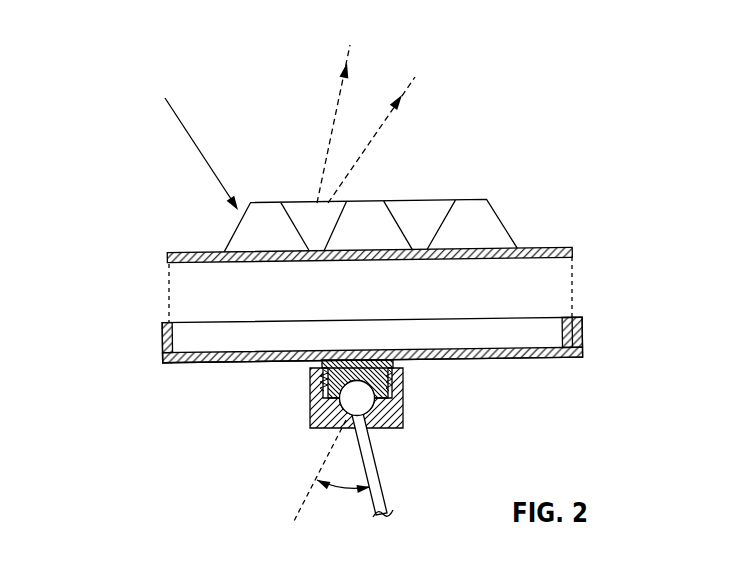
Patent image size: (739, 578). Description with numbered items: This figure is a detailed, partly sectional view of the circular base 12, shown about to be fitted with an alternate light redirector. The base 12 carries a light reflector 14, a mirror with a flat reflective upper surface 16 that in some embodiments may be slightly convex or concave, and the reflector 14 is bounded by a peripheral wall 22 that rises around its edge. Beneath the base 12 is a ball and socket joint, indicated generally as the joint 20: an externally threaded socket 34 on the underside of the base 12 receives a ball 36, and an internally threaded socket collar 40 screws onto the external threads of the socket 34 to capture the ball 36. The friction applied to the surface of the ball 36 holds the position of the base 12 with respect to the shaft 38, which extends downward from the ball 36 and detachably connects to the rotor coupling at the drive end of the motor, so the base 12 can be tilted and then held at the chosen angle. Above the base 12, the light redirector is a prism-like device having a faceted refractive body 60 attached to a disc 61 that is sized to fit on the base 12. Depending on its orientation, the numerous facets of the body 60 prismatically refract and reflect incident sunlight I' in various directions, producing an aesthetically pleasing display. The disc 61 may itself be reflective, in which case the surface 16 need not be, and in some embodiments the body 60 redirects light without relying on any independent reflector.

The incident sunlight I' is at (202, 154).
The circular base 12 is at (152, 366).
The light reflector 14 is at (178, 361).
The flat reflective upper surface 16 is at (217, 357).
The mounting assembly 20 is at (257, 376).
The peripheral wall 22 is at (163, 345).
The socket 34 is at (395, 376).
The ball 36 is at (358, 397).
The shaft 38 is at (380, 498).
The socket collar 40 is at (343, 414).
The faceted refractive body 60 is at (433, 212).
The disc 61 is at (179, 252).